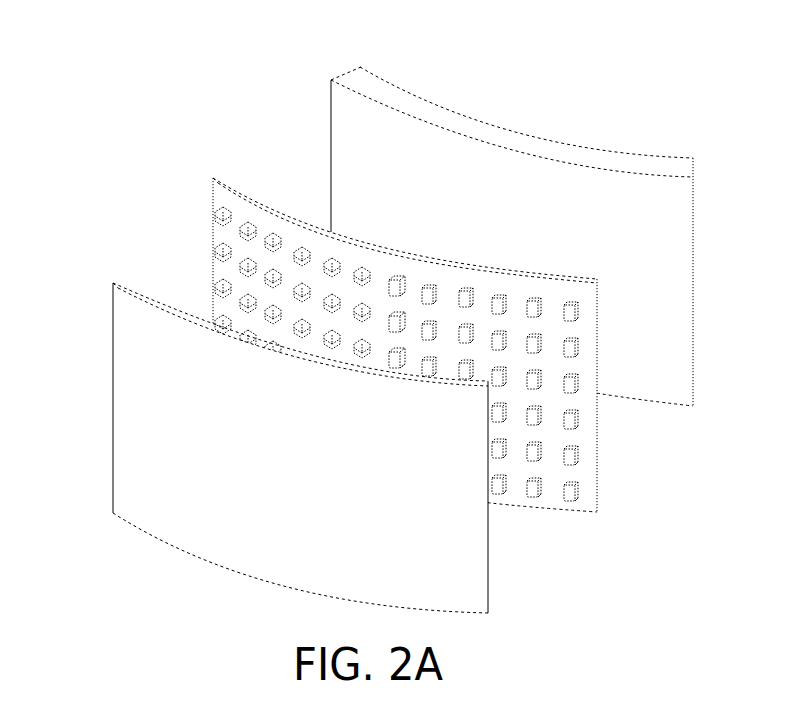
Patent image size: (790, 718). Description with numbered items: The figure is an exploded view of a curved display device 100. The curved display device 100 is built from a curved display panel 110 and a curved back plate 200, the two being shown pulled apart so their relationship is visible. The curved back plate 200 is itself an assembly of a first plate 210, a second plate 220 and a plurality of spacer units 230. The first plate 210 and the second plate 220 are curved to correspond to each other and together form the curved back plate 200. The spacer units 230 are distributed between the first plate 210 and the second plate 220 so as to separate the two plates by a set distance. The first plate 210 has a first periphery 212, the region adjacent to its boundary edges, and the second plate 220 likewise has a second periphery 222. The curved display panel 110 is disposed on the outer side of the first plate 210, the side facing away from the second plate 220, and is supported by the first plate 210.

The curved display device 100 is at (162, 36).
The curved display panel 110 is at (347, 68).
The curved back plate 200 is at (37, 245).
The first plate 210 is at (213, 175).
The first periphery 212 is at (585, 437).
The second plate 220 is at (113, 283).
The second periphery 222 is at (475, 548).
The spacer units 230 is at (268, 236).